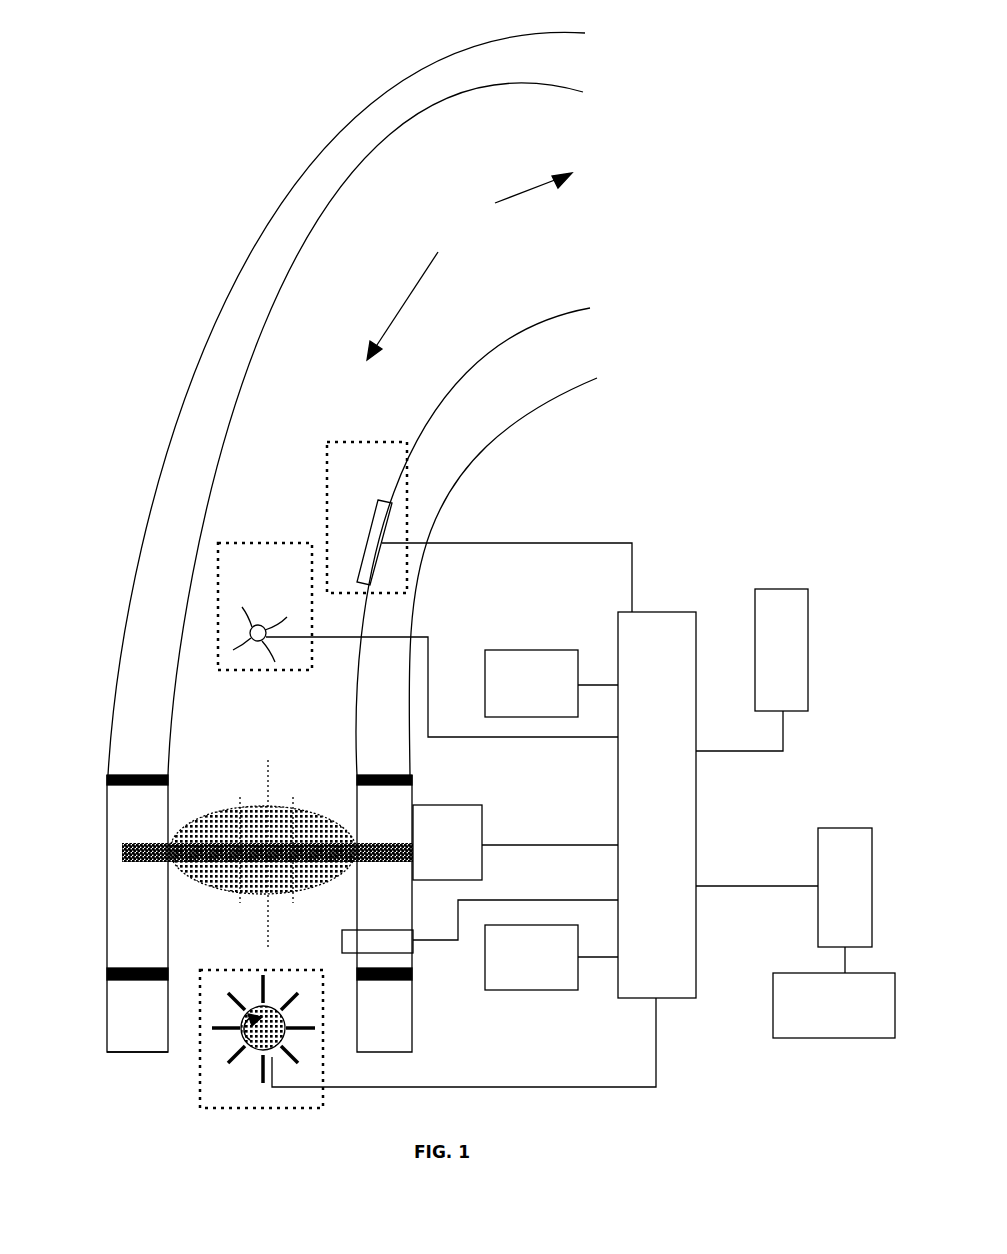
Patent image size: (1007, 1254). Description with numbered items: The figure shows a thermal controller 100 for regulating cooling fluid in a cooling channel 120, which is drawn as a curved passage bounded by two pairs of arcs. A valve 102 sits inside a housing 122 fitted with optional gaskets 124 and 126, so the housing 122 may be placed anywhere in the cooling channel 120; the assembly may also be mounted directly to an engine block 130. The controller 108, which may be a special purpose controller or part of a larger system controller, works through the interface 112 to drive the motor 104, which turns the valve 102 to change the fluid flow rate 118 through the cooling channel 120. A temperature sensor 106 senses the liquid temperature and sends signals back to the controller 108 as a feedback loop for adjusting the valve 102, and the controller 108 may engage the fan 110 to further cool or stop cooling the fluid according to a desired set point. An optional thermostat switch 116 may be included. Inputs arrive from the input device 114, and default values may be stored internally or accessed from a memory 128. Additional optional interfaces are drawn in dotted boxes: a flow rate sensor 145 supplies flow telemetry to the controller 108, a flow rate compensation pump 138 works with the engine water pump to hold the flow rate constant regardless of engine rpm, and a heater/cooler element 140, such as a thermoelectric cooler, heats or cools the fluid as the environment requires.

The thermal controller 100 is at (352, 403).
The valve 102 is at (323, 812).
The motor 104 is at (482, 805).
The temperature sensor 106 is at (402, 955).
The controller 108 is at (845, 828).
The fan 110 is at (535, 650).
The interface 112 is at (655, 612).
The input device 114 is at (790, 589).
The thermostat switch 116 is at (533, 990).
The fluid flow rate 118 is at (265, 910).
The cooling channel 120 is at (469, 266).
The housing 122 is at (120, 818).
The gasket 124 is at (107, 778).
The gasket 126 is at (107, 975).
The memory 128 is at (810, 1040).
The engine block 130 is at (107, 1050).
The flow rate compensation pump 138 is at (252, 1052).
The heater/cooler element 140 is at (367, 540).
The flow rate sensor 145 is at (262, 625).